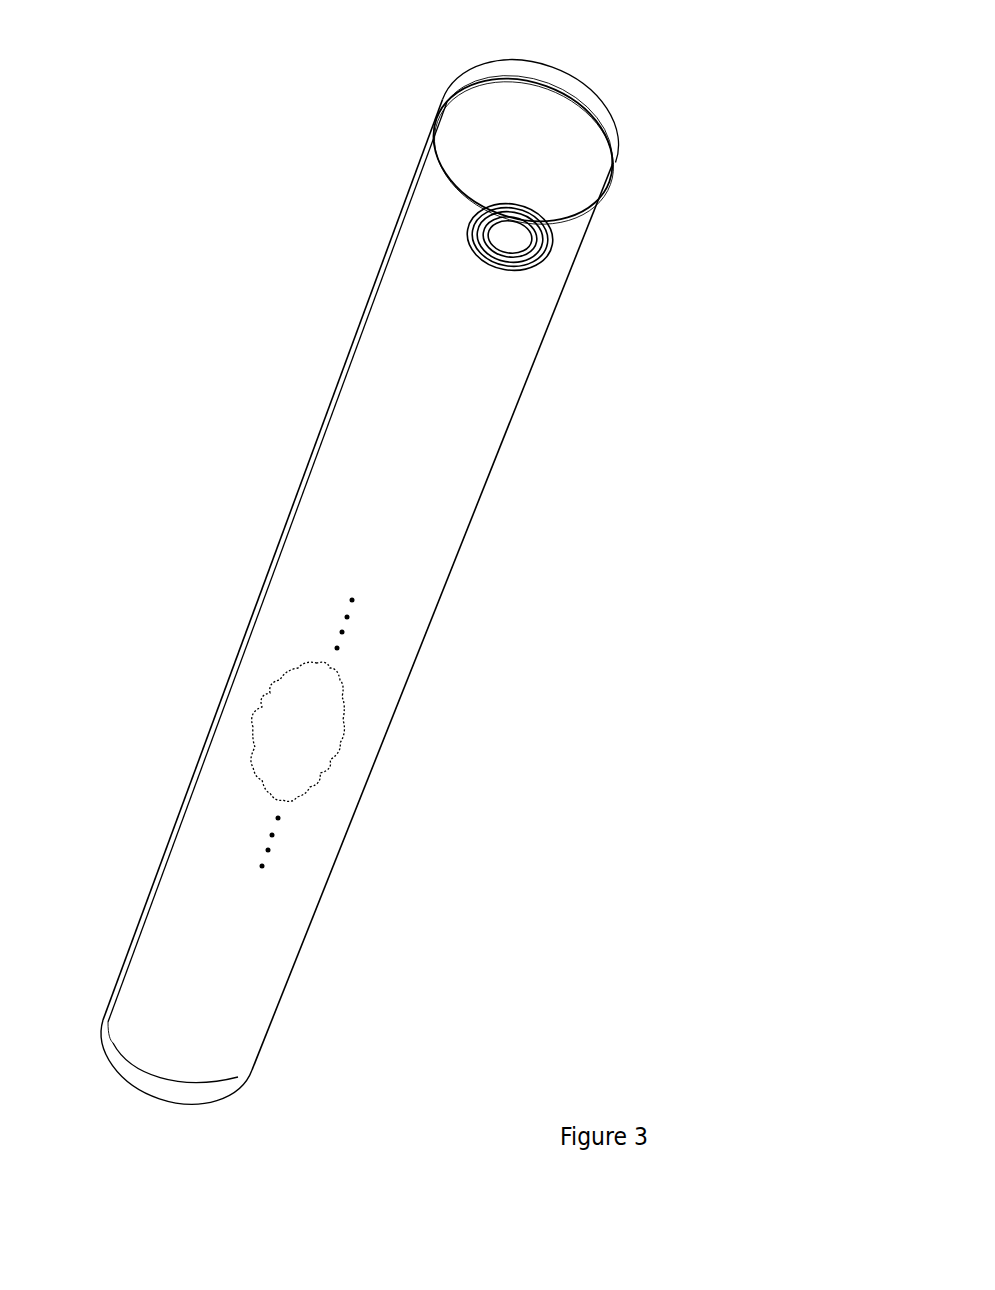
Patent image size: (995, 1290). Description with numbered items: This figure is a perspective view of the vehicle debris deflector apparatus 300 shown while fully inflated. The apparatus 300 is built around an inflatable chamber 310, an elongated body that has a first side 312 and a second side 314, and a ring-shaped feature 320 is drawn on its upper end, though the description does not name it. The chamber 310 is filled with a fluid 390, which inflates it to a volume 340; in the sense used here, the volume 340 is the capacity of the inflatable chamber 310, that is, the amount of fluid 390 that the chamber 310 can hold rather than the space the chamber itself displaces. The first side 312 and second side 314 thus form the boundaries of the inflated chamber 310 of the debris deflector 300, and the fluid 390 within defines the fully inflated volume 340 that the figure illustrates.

The debris deflector apparatus 300 is at (406, 586).
The inflatable chamber 310 is at (322, 417).
The first side 312 is at (528, 63).
The second side 314 is at (622, 175).
The ring aperture 320 is at (510, 270).
The volume 340 is at (152, 1073).
The fluid 390 is at (320, 775).